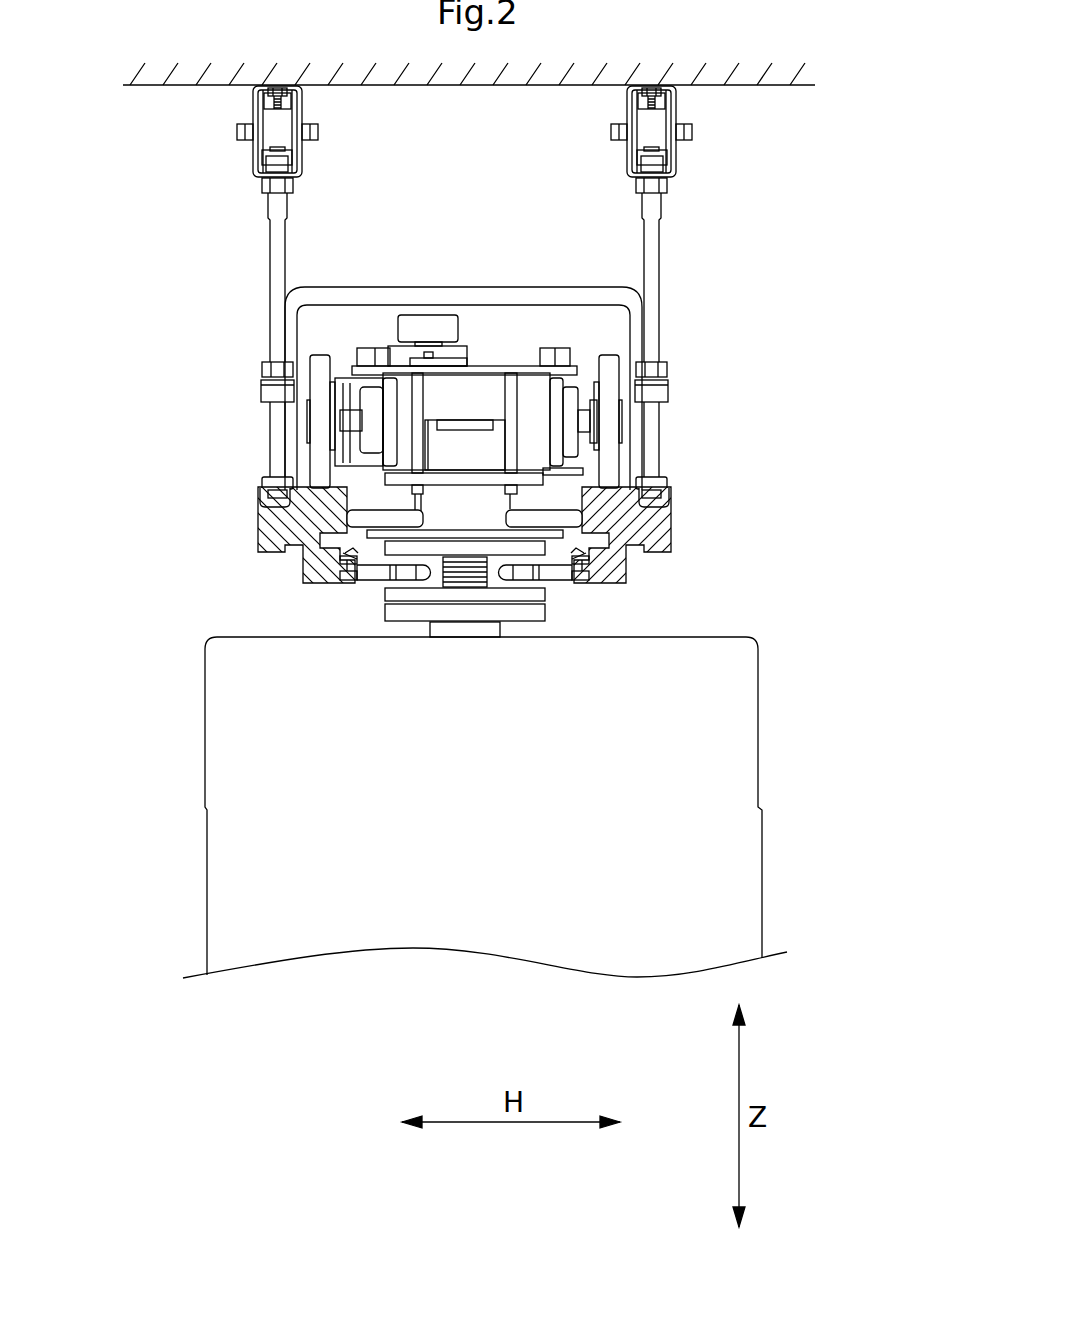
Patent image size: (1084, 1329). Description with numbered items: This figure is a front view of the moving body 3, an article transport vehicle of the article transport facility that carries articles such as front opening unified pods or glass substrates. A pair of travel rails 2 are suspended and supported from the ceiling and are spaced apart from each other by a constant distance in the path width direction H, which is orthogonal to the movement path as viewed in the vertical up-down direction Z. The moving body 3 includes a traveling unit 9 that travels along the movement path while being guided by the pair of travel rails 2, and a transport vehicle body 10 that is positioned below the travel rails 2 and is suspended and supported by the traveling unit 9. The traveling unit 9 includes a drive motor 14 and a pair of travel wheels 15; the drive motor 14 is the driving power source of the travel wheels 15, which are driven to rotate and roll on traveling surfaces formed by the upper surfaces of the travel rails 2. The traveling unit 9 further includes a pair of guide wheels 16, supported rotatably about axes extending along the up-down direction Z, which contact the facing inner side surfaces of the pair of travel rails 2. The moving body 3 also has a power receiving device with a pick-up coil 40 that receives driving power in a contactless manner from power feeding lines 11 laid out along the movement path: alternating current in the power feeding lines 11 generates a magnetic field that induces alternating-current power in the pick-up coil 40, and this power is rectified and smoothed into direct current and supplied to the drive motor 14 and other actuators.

The travel rail 2 is at (258, 517).
The moving body 3 is at (775, 333).
The traveling unit 9 is at (494, 338).
The transport vehicle body 10 is at (740, 858).
The power feeding line 11 is at (385, 580).
The drive motor 14 is at (347, 385).
The travel wheel 15 is at (317, 425).
The guide wheel 16 is at (577, 488).
The pick-up coil 40 is at (478, 578).